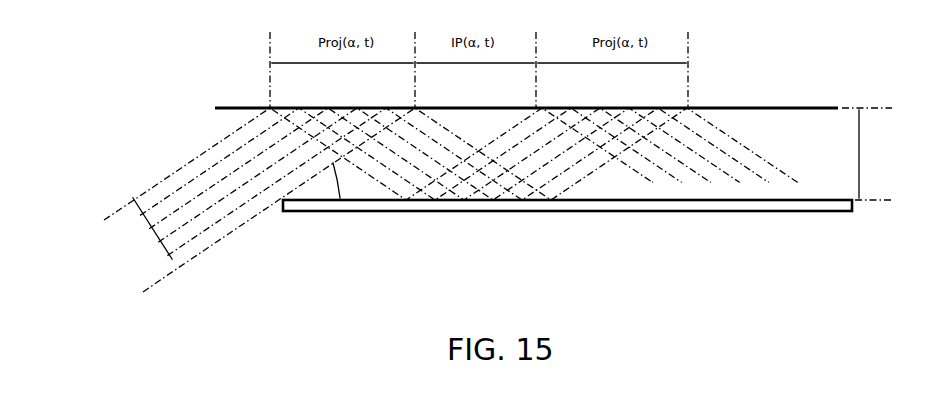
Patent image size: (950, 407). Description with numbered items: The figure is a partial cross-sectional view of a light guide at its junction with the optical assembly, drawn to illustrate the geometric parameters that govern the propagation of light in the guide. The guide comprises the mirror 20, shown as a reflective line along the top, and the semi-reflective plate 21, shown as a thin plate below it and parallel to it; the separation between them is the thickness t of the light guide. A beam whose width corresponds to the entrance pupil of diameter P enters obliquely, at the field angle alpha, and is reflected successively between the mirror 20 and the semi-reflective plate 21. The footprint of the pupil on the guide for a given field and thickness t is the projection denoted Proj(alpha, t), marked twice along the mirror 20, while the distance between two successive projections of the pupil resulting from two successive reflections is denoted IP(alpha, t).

The mirror 20 is at (778, 106).
The semi-reflective plate 21 is at (772, 212).
The thickness of the light guide t is at (868, 154).
The entrance pupil diameter P is at (151, 228).